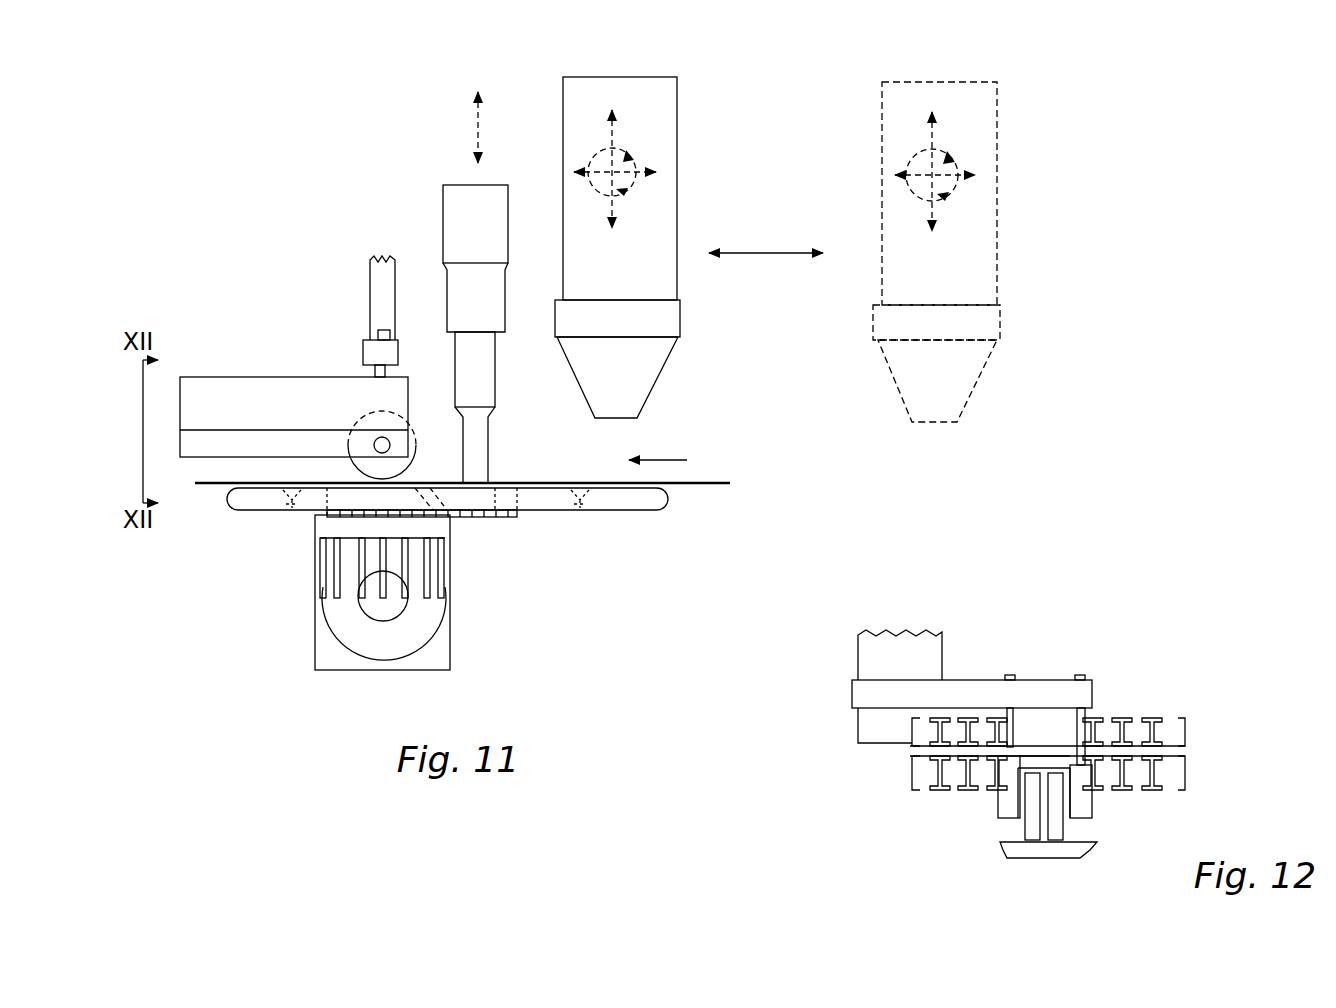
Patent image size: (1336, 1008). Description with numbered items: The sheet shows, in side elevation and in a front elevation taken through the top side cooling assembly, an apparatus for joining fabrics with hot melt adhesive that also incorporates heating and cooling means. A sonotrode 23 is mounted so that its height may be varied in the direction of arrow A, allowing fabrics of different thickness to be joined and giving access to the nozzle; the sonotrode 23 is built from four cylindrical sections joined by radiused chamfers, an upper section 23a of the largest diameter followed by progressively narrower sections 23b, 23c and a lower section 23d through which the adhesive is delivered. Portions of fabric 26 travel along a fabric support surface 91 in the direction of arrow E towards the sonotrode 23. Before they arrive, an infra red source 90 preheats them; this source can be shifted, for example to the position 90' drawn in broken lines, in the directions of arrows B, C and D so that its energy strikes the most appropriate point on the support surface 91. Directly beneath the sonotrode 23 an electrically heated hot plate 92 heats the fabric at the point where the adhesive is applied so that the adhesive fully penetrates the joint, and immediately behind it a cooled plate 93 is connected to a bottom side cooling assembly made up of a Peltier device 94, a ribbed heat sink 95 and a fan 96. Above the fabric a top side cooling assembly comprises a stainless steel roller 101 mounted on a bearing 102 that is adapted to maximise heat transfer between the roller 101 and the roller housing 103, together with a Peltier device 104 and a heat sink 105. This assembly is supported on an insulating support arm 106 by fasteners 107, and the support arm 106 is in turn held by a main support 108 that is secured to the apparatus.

In FIG. 11, the sonotrode 23 is at (483, 302).
In FIG. 11, the upper section 23a is at (508, 197).
In FIG. 11, the second section 23b is at (505, 307).
In FIG. 11, the third section 23c is at (495, 398).
In FIG. 11, the lower section 23d is at (488, 467).
In FIG. 11, the fabric 26 is at (710, 483).
In FIG. 11, the infra red source 90 is at (656, 228).
In FIG. 11, the infra red source position 90' is at (979, 242).
In FIG. 11, the fabric support surface 91 is at (605, 497).
In FIG. 12, the fabric support surface 91 is at (1087, 848).
In FIG. 11, the hot plate 92 is at (495, 500).
In FIG. 11, the cooled plate 93 is at (423, 483).
In FIG. 11, the Peltier device 94 is at (343, 513).
In FIG. 11, the ribbed heat sink 95 is at (380, 560).
In FIG. 11, the fan 96 is at (430, 640).
In FIG. 11, the stainless steel roller 101 is at (412, 430).
In FIG. 12, the stainless steel roller 101 is at (1023, 828).
In FIG. 12, the bearing 102 is at (1063, 825).
In FIG. 11, the roller housing 103 is at (298, 445).
In FIG. 12, the roller housing 103 is at (995, 800).
In FIG. 12, the Peltier device 104 is at (1077, 762).
In FIG. 11, the heat sink 105 is at (222, 395).
In FIG. 12, the heat sink 105 is at (1152, 717).
In FIG. 11, the insulating support arm 106 is at (350, 342).
In FIG. 12, the insulating support arm 106 is at (1093, 693).
In FIG. 11, the fasteners 107 is at (380, 330).
In FIG. 12, the fasteners 107 is at (1078, 675).
In FIG. 11, the main support 108 is at (368, 275).
In FIG. 12, the main support 108 is at (942, 640).
In FIG. 11, the arrow A is at (460, 118).
In FIG. 11, the arrow B is at (613, 125).
In FIG. 11, the arrow C is at (630, 173).
In FIG. 11, the arrow D is at (595, 148).
In FIG. 11, the arrow E is at (663, 453).